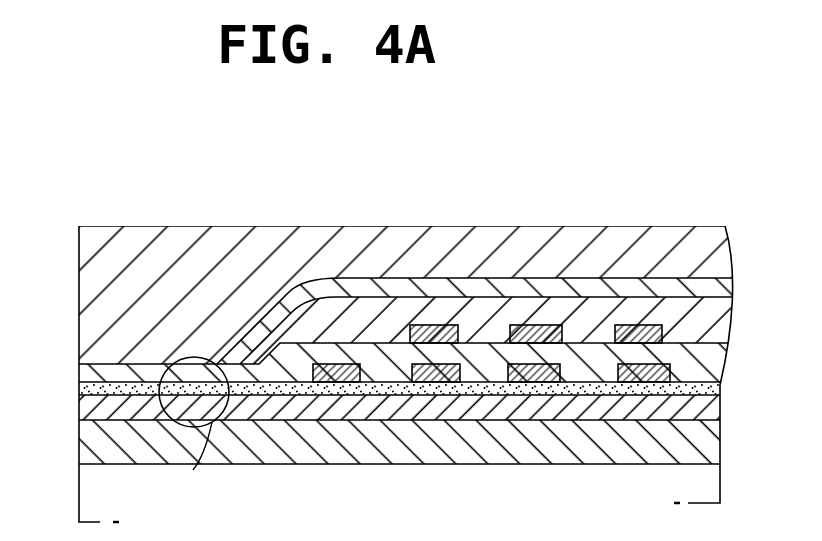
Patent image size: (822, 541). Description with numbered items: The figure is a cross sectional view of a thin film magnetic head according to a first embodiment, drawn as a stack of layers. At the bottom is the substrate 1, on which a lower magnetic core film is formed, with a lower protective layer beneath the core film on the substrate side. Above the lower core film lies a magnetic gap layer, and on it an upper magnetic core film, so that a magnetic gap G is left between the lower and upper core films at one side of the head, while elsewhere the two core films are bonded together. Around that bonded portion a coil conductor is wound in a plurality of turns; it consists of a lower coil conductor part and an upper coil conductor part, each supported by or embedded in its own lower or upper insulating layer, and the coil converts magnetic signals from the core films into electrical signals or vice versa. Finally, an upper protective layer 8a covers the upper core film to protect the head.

The substrate 1 is at (705, 487).
The upper protective layer 8a is at (238, 235).
The magnetic gap G is at (78, 390).